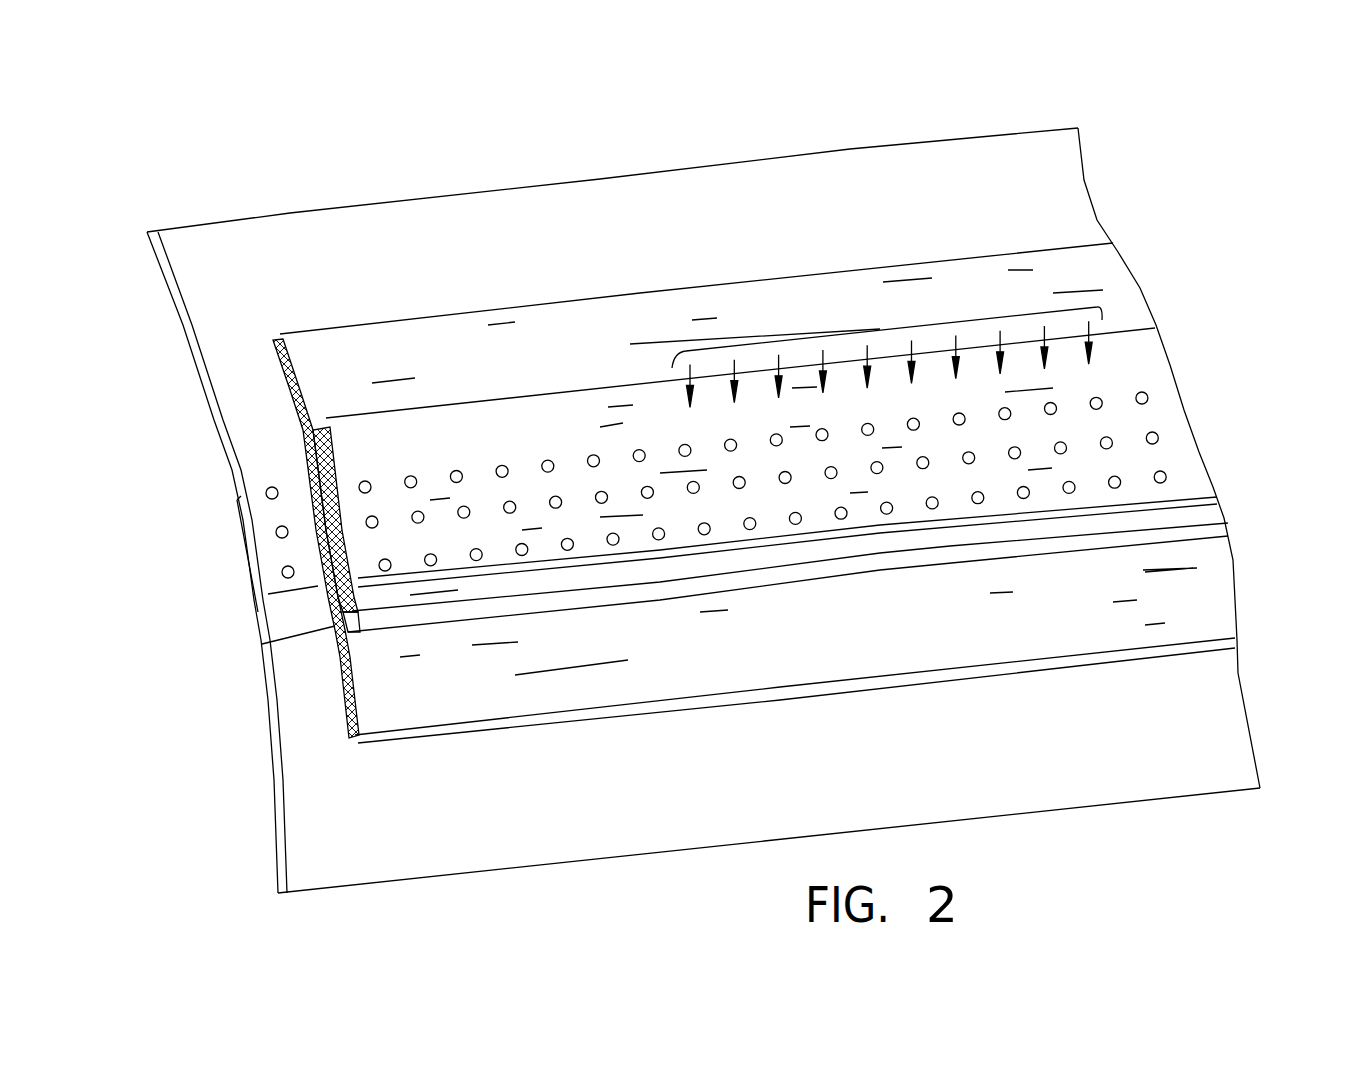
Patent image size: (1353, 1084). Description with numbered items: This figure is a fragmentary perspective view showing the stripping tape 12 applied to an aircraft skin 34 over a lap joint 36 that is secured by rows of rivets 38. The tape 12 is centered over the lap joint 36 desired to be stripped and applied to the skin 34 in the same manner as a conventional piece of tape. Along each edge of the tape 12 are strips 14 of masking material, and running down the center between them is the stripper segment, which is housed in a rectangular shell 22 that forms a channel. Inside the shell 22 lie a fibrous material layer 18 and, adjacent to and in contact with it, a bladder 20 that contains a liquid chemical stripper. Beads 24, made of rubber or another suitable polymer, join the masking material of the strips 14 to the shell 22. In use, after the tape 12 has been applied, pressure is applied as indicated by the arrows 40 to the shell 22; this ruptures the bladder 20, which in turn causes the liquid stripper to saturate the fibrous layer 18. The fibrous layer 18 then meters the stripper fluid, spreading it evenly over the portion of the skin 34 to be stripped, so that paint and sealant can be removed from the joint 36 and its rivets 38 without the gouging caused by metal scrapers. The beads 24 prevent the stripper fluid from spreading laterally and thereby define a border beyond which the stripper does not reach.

The tape 12 is at (1198, 594).
The strips 14 is at (365, 352).
The fibrous material layer 18 is at (313, 463).
The bladder 20 is at (313, 490).
The rectangular shell 22 is at (322, 442).
The beads 24 is at (343, 630).
The aircraft skin 34 is at (1077, 206).
The lap joint 36 is at (224, 500).
The rivets 38 is at (1146, 394).
The arrows 40 is at (884, 302).